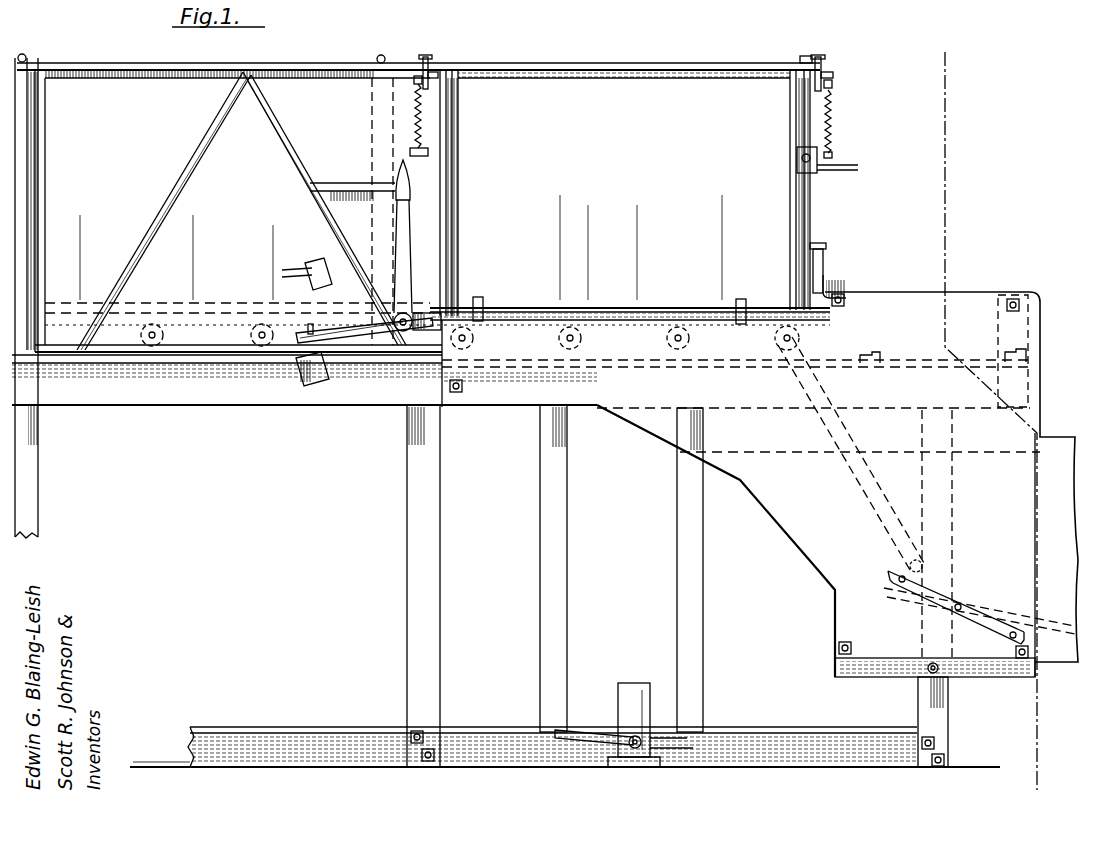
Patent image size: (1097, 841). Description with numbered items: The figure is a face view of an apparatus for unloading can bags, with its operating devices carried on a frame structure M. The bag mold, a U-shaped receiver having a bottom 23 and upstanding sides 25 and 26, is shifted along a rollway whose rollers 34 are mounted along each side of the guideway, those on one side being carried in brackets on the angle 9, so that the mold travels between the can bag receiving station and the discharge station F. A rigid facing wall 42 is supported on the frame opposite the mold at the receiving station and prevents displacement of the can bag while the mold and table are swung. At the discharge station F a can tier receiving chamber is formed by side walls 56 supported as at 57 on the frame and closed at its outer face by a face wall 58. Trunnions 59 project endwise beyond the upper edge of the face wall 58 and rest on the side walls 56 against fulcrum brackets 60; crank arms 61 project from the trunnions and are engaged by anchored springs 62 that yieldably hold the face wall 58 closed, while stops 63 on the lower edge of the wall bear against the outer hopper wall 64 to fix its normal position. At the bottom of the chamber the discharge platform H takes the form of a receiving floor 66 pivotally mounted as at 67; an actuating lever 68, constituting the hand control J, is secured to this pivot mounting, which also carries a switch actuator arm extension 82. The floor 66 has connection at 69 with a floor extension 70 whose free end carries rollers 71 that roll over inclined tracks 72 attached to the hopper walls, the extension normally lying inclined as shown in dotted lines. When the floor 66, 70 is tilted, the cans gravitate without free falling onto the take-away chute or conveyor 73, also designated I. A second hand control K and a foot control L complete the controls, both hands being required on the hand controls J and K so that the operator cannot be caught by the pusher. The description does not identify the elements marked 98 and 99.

The angle 9 is at (948, 62).
The bottom 23 is at (172, 308).
The side 25 is at (30, 150).
The side 26 is at (374, 137).
The rollers 34 is at (248, 318).
The rigid facing wall 42 is at (115, 90).
The side walls 56 is at (450, 131).
The support 57 is at (826, 268).
The face wall 58 is at (748, 84).
The trunnions 59 is at (418, 62).
The fulcrum brackets 60 is at (440, 63).
The crank arms 61 is at (436, 78).
The anchored springs 62 is at (413, 104).
The stops 63 is at (484, 305).
The outer hopper wall 64 is at (614, 340).
The receiving floor 66 is at (436, 318).
The pivot mounting 67 is at (410, 316).
The actuating lever 68 is at (410, 250).
The connection 69 is at (780, 350).
The floor extension 70 is at (835, 425).
The rollers 71 is at (922, 565).
The inclined tracks 72 is at (1008, 620).
The feed-away conveyor 73 is at (952, 600).
The switch actuator arm extension 82 is at (338, 340).
The stop block 98 is at (312, 265).
The block 99 is at (310, 380).
The discharge station F is at (680, 62).
The discharge platform H is at (660, 312).
The take-away chute or conveyor I is at (1054, 628).
The hand control J is at (414, 218).
The hand control K is at (796, 160).
The foot control L is at (588, 728).
The frame structure M is at (400, 682).